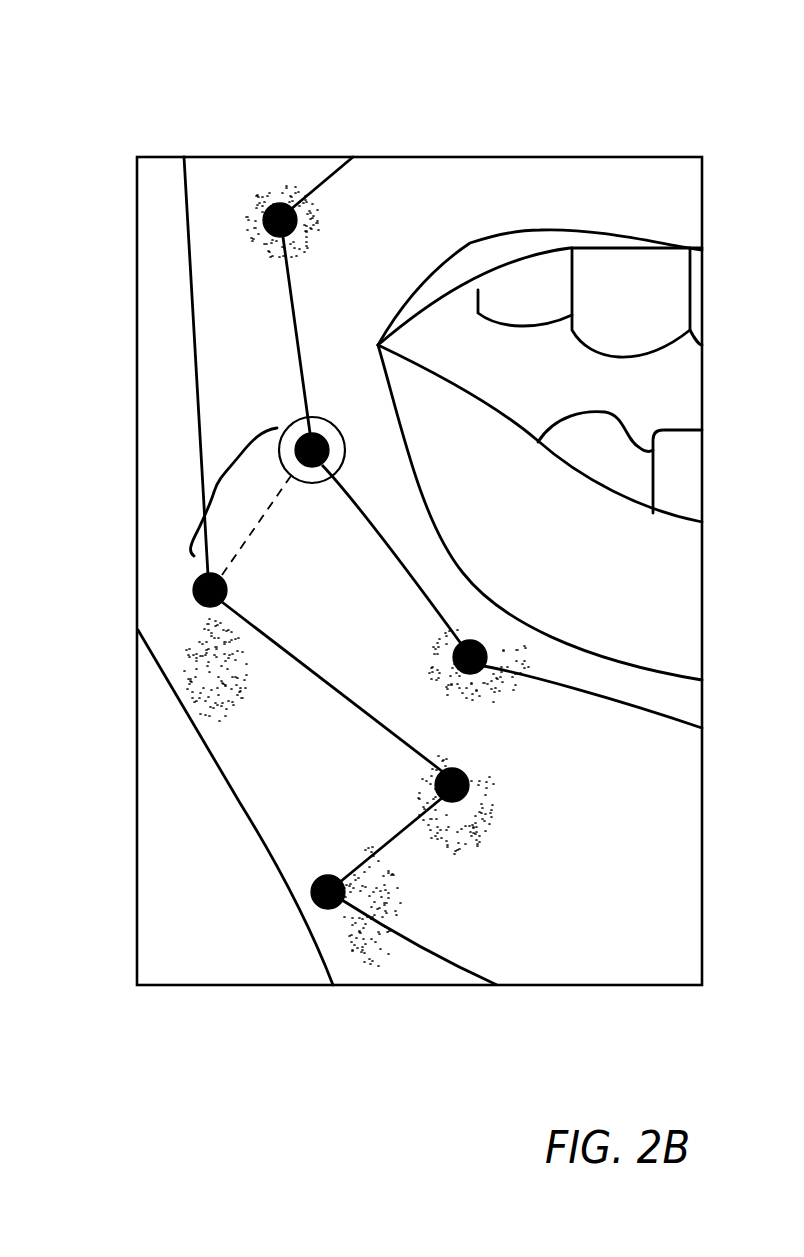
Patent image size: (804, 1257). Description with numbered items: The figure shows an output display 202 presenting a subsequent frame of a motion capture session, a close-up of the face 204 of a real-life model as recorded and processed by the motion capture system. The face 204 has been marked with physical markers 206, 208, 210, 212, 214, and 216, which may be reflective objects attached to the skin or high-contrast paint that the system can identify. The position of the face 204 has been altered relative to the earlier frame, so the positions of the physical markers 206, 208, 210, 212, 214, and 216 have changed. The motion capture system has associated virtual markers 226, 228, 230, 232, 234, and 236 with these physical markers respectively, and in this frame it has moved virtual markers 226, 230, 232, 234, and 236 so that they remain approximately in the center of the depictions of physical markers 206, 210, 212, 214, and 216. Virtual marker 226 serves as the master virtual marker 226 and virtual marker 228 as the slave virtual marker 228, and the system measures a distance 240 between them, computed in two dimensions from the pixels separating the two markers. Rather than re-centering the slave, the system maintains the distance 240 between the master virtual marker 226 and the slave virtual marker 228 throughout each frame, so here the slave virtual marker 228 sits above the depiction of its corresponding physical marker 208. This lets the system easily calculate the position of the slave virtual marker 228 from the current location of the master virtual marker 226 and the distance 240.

The output display 202 is at (582, 96).
The face 204 is at (673, 573).
The physical marker 206 is at (335, 425).
The physical marker 208 is at (210, 653).
The physical marker 210 is at (360, 927).
The physical marker 212 is at (470, 822).
The physical marker 214 is at (487, 684).
The physical marker 216 is at (258, 207).
The master virtual marker 226 is at (292, 436).
The slave virtual marker 228 is at (193, 582).
The virtual marker 230 is at (310, 900).
The virtual marker 232 is at (470, 782).
The virtual marker 234 is at (479, 640).
The virtual marker 236 is at (276, 205).
The distance 240 is at (214, 492).